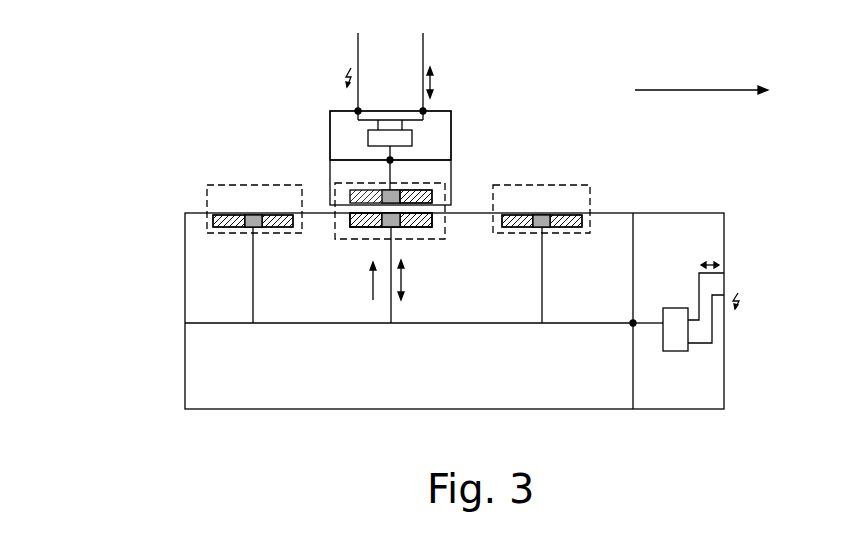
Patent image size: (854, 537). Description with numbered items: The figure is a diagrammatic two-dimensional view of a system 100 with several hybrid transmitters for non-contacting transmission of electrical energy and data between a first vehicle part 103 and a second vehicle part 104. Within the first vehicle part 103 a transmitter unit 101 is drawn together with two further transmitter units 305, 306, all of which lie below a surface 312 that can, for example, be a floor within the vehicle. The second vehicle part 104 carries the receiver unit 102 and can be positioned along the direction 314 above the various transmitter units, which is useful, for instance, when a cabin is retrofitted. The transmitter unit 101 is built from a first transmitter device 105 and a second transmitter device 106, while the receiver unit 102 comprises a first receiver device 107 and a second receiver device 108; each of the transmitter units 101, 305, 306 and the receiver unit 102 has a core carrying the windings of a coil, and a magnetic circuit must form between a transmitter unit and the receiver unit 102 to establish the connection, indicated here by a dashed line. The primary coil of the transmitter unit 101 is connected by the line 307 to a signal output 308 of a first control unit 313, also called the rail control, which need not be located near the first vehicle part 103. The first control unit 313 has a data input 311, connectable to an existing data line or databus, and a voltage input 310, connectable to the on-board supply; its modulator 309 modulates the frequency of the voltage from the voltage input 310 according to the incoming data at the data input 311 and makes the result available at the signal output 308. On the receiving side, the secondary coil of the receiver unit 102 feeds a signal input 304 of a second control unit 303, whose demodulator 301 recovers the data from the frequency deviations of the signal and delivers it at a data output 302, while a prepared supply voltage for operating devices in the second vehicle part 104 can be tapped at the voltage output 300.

The system 100 is at (537, 115).
The transmitter unit 101 is at (425, 230).
The receiver unit 102 is at (336, 186).
The first vehicle part 103 is at (197, 302).
The second vehicle part 104 is at (330, 111).
The first transmitter device 105 is at (270, 228).
The second transmitter device 106 is at (247, 228).
The first receiver device 107 is at (428, 190).
The second receiver device 108 is at (387, 190).
The voltage output 300 is at (358, 108).
The demodulator 301 is at (397, 142).
The data output 302 is at (424, 110).
The second control unit 303 is at (432, 143).
The signal input 304 is at (392, 160).
The further transmitter unit 305 is at (222, 216).
The further transmitter unit 306 is at (567, 210).
The line 307 is at (218, 325).
The signal output 308 is at (631, 325).
The modulator 309 is at (680, 345).
The voltage input 310 is at (724, 295).
The data input 311 is at (724, 273).
The surface 312 is at (637, 207).
The first control unit 313 is at (692, 397).
The direction 314 is at (697, 90).